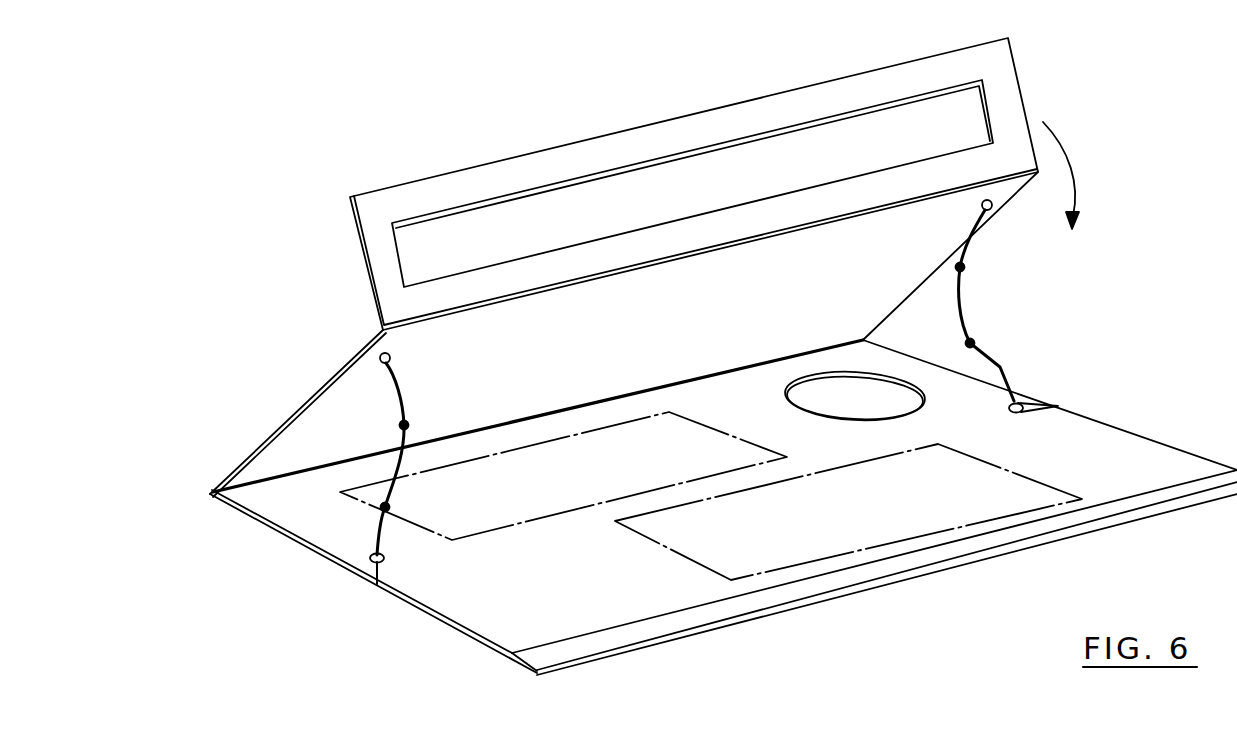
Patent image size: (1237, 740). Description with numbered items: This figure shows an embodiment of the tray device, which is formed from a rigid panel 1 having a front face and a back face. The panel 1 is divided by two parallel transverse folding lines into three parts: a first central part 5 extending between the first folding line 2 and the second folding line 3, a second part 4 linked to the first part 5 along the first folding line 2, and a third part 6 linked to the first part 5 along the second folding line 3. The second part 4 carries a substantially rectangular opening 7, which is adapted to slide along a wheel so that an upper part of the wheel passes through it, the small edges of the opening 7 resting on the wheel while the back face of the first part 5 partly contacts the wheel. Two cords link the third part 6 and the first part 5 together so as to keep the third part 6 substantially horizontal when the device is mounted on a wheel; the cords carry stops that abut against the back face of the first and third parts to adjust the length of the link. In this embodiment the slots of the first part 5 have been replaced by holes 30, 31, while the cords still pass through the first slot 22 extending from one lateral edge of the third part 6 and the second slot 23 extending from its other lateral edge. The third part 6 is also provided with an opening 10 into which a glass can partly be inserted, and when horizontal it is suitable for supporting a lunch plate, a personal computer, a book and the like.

The rigid panel 1 is at (723, 362).
The first folding line 2 is at (629, 272).
The second folding line 3 is at (708, 378).
The second part 4 is at (682, 184).
The first central part 5 is at (302, 404).
The third part 6 is at (458, 621).
The opening 7 is at (502, 217).
The opening 10 is at (813, 388).
The first slot 22 is at (376, 585).
The second slot 23 is at (1053, 407).
The hole 30 is at (379, 357).
The hole 31 is at (990, 210).